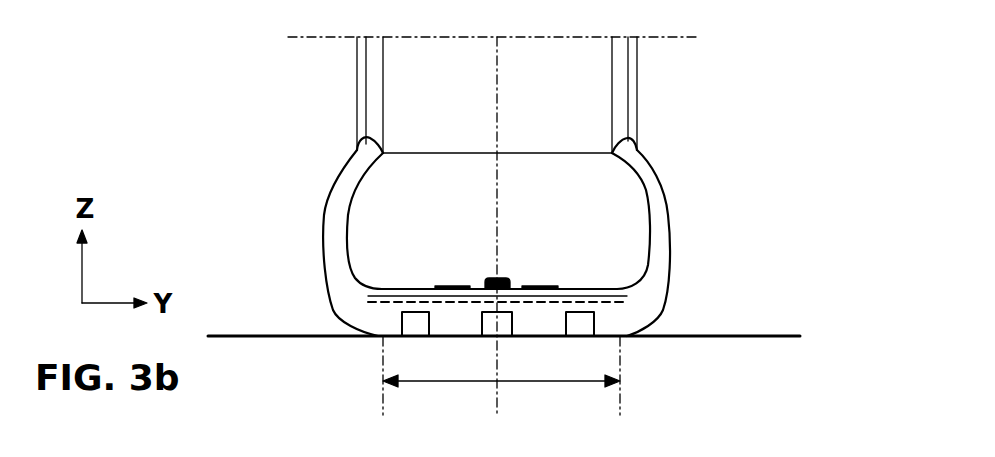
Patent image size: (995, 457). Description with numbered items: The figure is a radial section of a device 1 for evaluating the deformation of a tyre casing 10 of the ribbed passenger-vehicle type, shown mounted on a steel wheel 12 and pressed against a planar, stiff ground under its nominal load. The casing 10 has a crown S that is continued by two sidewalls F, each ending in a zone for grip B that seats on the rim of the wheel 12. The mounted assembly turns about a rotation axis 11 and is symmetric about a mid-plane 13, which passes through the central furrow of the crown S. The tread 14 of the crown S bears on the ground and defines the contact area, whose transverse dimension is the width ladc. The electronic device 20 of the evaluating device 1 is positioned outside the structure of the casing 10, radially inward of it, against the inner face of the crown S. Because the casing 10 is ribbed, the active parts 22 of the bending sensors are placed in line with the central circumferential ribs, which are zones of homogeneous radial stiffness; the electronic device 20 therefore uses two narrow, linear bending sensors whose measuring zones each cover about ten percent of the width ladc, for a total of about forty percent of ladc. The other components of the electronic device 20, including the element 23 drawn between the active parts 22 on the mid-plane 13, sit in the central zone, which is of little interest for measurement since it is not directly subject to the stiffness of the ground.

The device for evaluating the deformation of the tyre casing 1 is at (773, 230).
The tyre casing 10 is at (653, 205).
The rotation axis 11 is at (315, 37).
The wheel 12 is at (620, 93).
The mid-plane 13 is at (495, 89).
The tread 14 is at (627, 319).
The electronic device 20 is at (523, 234).
The active part of the bending sensors 22 is at (453, 283).
The sensor chip 23 is at (490, 278).
The zones for grip B is at (357, 149).
The sidewalls F is at (338, 209).
The crown S is at (355, 300).
The width of the contact area ladc is at (501, 379).